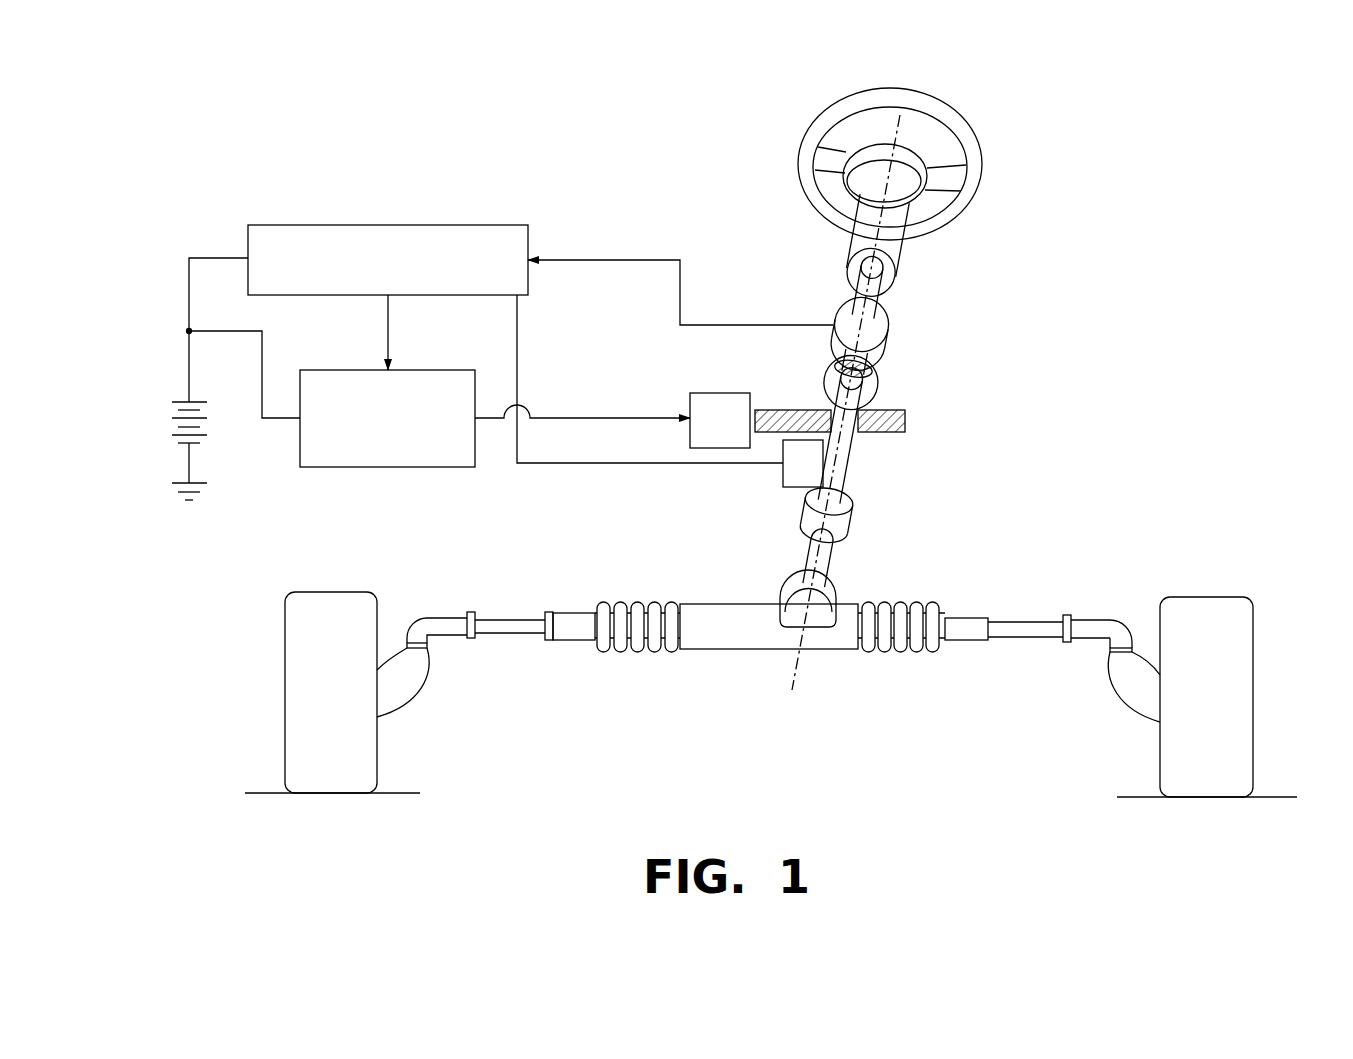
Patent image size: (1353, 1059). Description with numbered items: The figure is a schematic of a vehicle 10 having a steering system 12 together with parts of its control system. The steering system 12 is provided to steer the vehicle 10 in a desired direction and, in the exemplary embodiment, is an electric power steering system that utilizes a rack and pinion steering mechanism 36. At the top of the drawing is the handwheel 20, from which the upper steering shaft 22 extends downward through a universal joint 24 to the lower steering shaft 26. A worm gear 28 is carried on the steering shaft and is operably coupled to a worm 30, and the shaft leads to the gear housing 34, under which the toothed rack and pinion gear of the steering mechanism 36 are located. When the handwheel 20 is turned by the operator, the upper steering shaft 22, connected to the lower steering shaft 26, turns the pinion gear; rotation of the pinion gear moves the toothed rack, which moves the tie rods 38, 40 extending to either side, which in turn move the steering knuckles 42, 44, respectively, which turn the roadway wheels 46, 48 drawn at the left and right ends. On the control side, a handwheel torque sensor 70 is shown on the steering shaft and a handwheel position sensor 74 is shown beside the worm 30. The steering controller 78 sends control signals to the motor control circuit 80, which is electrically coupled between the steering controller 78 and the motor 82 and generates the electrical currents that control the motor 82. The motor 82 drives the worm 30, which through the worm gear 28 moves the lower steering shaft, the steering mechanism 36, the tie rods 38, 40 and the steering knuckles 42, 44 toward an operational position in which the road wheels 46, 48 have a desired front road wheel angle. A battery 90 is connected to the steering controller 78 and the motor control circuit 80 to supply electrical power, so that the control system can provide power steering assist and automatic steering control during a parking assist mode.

The vehicle 10 is at (1202, 120).
The steering system 12 is at (1057, 232).
The handwheel 20 is at (943, 120).
The upper steering shaft 22 is at (912, 268).
The universal joint 24 is at (847, 512).
The lower steering shaft 26 is at (823, 562).
The worm gear 28 is at (868, 372).
The worm 30 is at (903, 413).
The gear housing 34 is at (785, 587).
The steering mechanism 36 is at (917, 610).
The tie rod 38 is at (515, 612).
The tie rod 40 is at (1027, 630).
The steering knuckle 42 is at (410, 690).
The steering knuckle 44 is at (1130, 692).
The roadway wheel 46 is at (292, 597).
The roadway wheel 48 is at (1227, 603).
The handwheel torque sensor 70 is at (882, 323).
The handwheel position sensor 74 is at (783, 476).
The steering controller 78 is at (455, 225).
The motor control circuit 80 is at (367, 467).
The motor 82 is at (712, 393).
The battery 90 is at (183, 400).